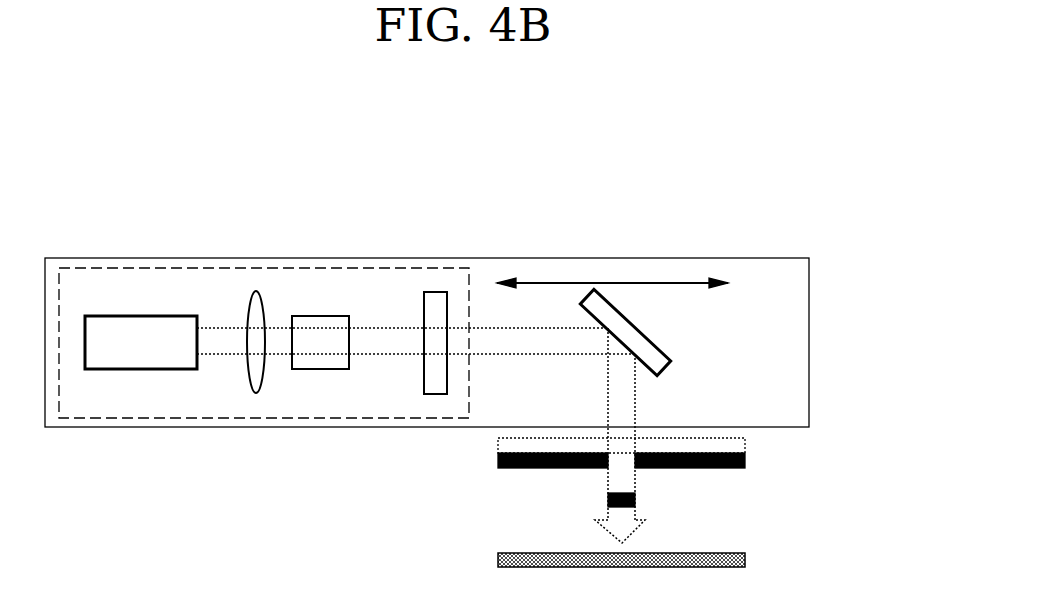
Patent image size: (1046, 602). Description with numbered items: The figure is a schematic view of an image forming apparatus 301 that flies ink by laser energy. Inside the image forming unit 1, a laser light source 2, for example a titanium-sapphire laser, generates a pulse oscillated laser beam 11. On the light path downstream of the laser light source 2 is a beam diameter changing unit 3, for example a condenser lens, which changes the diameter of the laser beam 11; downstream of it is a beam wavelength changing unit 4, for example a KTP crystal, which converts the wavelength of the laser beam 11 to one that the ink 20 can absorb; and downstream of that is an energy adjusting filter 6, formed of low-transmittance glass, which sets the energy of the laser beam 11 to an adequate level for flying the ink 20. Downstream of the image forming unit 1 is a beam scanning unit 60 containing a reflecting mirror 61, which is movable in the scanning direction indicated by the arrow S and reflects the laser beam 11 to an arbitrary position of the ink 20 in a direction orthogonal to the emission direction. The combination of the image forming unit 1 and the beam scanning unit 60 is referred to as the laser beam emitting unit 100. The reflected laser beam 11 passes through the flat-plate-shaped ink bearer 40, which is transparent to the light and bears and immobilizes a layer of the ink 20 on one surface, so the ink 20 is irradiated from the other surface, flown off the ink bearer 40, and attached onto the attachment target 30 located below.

The image forming apparatus 301 is at (768, 200).
The image forming unit 1 is at (83, 258).
The laser beam emitting unit 100 is at (133, 267).
The laser light source 2 is at (155, 315).
The laser beam 11 is at (215, 360).
The beam diameter changing unit 3 is at (258, 291).
The beam wavelength changing unit 4 is at (328, 316).
The energy adjusting filter 6 is at (443, 292).
The beam scanning unit 60 is at (673, 322).
The reflecting mirror 61 is at (672, 362).
The ink bearer 40 is at (745, 442).
The ink 20 is at (745, 462).
The attachment target 30 is at (745, 560).